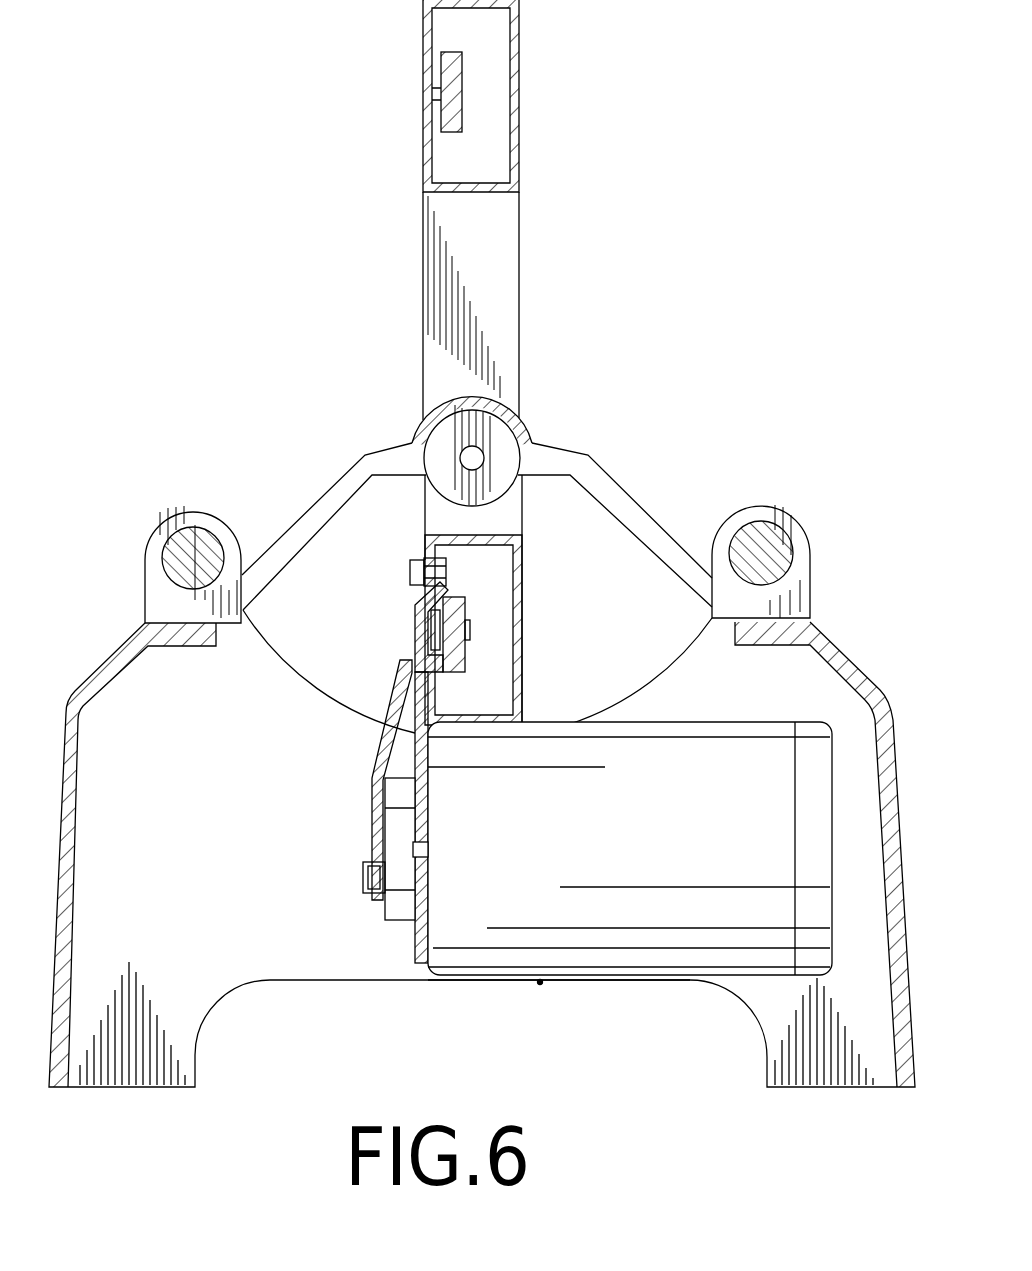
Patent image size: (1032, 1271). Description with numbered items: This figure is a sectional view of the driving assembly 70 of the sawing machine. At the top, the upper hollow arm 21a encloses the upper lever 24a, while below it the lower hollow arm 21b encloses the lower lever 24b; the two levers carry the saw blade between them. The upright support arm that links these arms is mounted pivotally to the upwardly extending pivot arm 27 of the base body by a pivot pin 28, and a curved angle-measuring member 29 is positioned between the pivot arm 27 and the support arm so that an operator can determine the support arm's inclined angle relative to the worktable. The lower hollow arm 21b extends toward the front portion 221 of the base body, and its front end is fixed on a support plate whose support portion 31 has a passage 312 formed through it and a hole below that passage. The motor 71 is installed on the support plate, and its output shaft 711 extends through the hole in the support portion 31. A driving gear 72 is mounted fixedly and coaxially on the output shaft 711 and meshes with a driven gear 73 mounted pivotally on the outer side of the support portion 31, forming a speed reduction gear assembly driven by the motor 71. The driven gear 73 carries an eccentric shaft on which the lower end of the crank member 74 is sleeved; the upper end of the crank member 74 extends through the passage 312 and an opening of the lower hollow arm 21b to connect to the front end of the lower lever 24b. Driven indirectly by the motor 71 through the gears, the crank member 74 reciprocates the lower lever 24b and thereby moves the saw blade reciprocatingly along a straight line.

The upper hollow arm 21a is at (520, 57).
The upper lever 24a is at (461, 108).
The curved angle-measuring member 29 is at (500, 410).
The pivot pin 28 is at (482, 457).
The pivot arm 27 is at (649, 527).
The front portion 221 is at (833, 638).
The lower hollow arm 21b is at (525, 573).
The lower lever 24b is at (468, 627).
The passage 312 is at (418, 648).
The crank member 74 is at (378, 745).
The support portion 31 is at (427, 745).
The driving gear 72 is at (393, 837).
The output shaft 711 is at (428, 848).
The driven gear 73 is at (395, 902).
The driving assembly 70 is at (540, 983).
The motor 71 is at (620, 945).